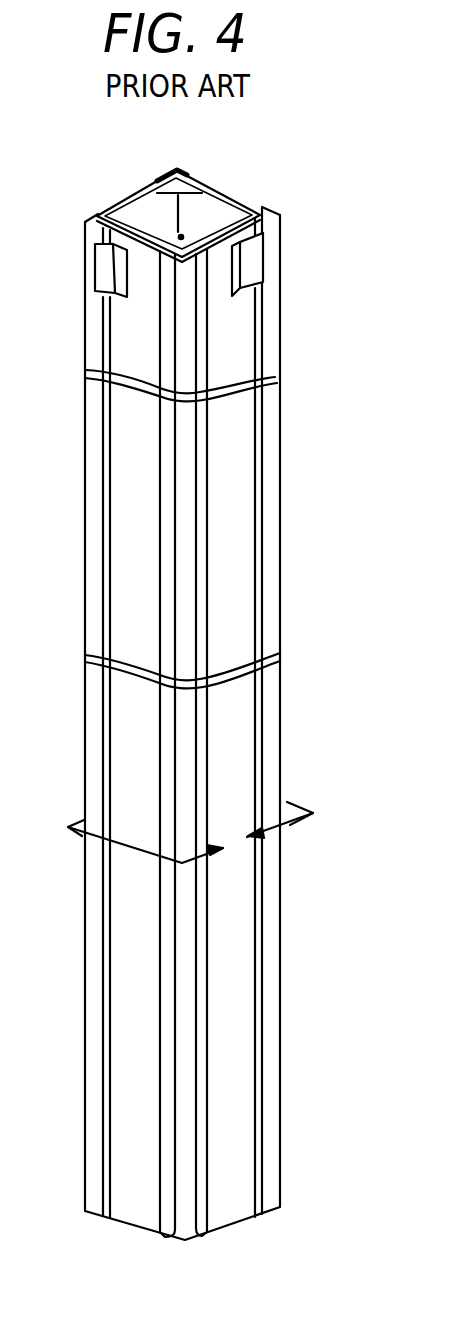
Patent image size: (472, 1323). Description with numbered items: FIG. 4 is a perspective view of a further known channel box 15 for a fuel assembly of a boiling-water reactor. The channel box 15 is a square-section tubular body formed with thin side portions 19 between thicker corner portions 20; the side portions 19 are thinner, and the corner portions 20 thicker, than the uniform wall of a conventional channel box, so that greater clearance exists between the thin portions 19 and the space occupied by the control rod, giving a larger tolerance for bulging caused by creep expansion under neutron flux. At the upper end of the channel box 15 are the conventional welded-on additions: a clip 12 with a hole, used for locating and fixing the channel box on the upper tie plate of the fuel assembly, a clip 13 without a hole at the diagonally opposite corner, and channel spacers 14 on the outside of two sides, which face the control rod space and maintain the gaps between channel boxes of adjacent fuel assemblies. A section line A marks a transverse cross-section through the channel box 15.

The clip 12 is at (182, 236).
The clip 13 is at (178, 188).
The channel spacers 14 is at (256, 263).
The channel box 15 is at (142, 588).
The thin side portions 19 is at (240, 552).
The thicker corner portions 20 is at (182, 485).
The section line A is at (190, 832).